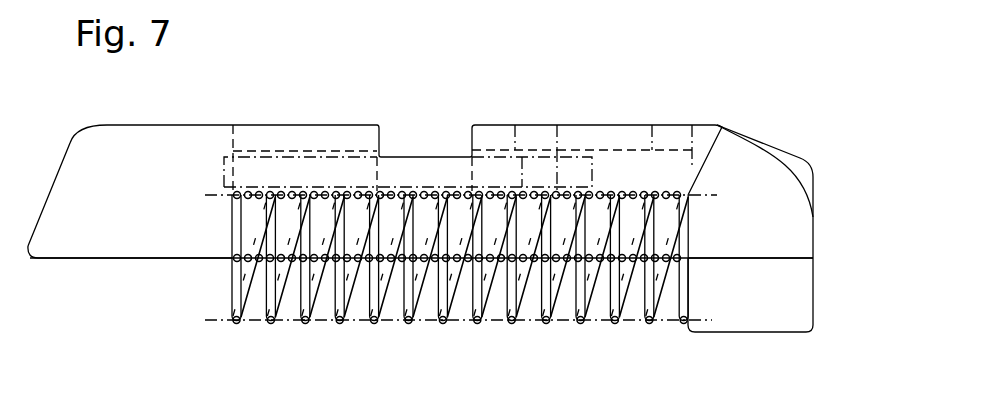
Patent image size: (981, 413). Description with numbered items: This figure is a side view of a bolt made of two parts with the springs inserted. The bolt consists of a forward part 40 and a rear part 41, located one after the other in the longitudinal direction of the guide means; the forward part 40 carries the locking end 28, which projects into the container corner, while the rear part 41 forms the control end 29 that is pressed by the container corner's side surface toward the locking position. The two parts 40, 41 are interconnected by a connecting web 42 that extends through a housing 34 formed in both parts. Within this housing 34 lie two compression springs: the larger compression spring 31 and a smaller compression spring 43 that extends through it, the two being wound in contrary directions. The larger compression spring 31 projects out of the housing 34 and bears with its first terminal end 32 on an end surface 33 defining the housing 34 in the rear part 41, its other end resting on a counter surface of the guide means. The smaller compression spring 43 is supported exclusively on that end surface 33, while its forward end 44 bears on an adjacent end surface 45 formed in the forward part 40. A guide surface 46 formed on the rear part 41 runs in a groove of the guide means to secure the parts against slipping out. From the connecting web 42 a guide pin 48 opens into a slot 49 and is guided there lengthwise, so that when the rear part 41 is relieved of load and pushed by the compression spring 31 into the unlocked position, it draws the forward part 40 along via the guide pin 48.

The locking end 28 is at (53, 183).
The control end 29 is at (815, 210).
The compression spring 31 is at (233, 275).
The first terminal end 32 is at (686, 247).
The end surface 33 is at (686, 247).
The housing 34 is at (650, 182).
The forward part 40 is at (97, 247).
The rear part 41 is at (797, 242).
The connecting web 42 is at (413, 167).
The smaller compression spring 43 is at (717, 125).
The forward end 44 is at (233, 213).
The end surface 45 is at (247, 225).
The guide surface 46 is at (755, 322).
The guide pin 48 is at (532, 137).
The slot 49 is at (593, 133).